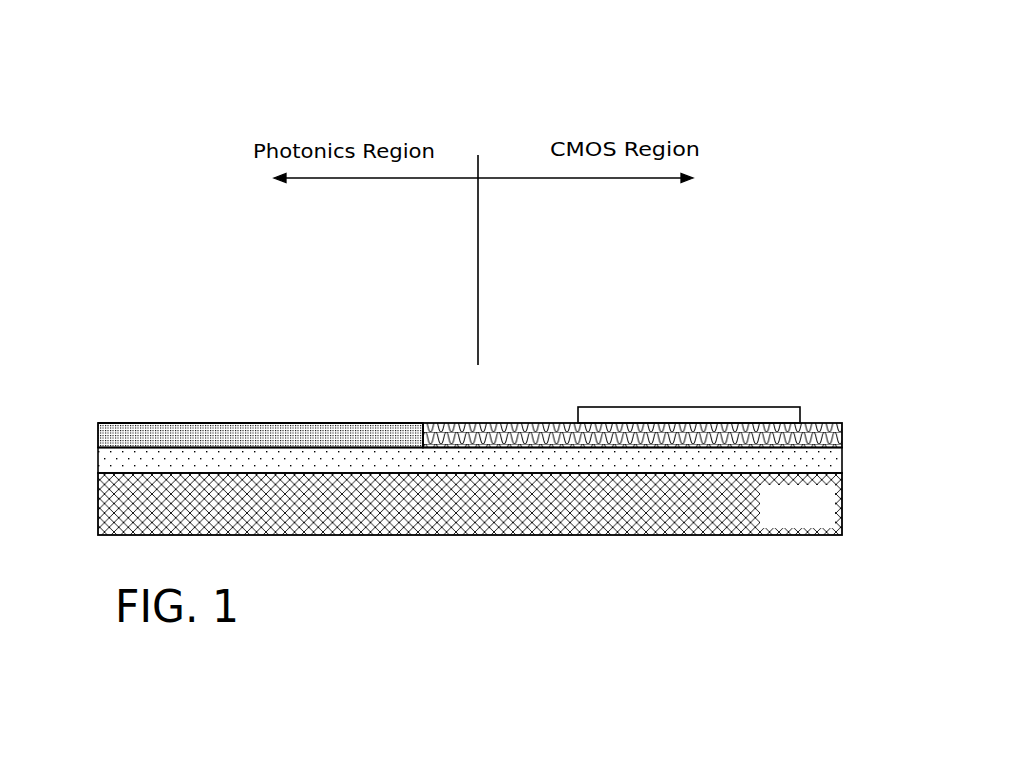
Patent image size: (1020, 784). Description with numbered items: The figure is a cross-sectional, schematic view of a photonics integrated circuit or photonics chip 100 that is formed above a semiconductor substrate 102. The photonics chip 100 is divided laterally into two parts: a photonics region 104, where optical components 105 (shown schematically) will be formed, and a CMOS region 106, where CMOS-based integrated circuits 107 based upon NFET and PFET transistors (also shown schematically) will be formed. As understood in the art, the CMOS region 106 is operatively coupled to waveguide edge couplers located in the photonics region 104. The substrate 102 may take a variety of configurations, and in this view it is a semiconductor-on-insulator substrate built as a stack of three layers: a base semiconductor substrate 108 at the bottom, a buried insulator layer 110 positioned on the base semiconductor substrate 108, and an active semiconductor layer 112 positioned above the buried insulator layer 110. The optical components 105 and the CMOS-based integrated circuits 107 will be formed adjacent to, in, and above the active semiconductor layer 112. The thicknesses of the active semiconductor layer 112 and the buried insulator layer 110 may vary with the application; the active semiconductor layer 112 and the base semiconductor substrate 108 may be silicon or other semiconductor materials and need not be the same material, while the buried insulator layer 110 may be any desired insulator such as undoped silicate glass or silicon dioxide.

The photonics integrated circuit 100 is at (161, 122).
The semiconductor substrate 102 is at (850, 423).
The photonics region 104 is at (259, 380).
The optical components 105 is at (353, 418).
The CMOS region 106 is at (692, 341).
The CMOS-based integrated circuits 107 is at (742, 407).
The base semiconductor substrate 108 is at (819, 521).
The buried insulator layer 110 is at (136, 461).
The active semiconductor layer 112 is at (547, 437).